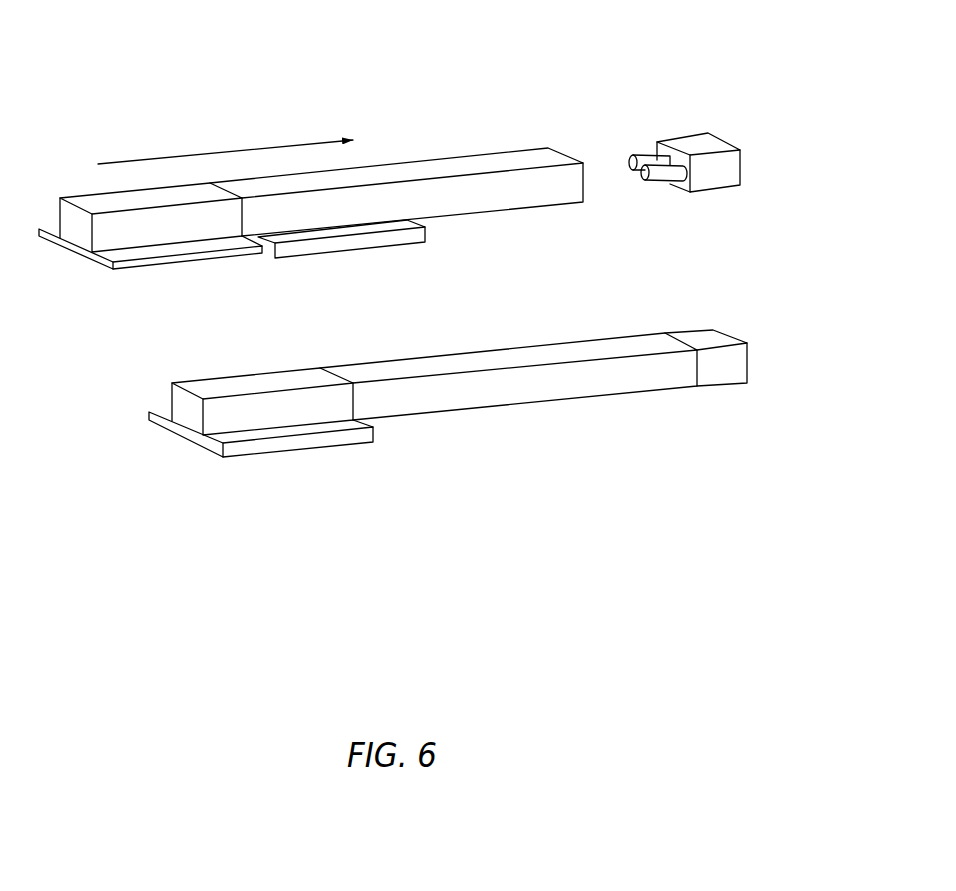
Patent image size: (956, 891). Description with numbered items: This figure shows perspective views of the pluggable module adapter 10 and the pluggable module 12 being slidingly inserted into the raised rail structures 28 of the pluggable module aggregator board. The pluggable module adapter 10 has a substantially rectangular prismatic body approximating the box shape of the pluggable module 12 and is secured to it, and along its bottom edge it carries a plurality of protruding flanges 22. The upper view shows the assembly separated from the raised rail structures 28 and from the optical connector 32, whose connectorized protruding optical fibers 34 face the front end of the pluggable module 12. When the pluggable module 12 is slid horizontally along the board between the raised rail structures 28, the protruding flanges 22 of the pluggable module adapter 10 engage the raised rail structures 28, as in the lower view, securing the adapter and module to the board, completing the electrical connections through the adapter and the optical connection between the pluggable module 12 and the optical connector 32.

The pluggable module adapter 10 is at (165, 180).
The pluggable module 12 is at (415, 157).
The protruding flanges 22 is at (152, 272).
The raised rail structures 28 is at (310, 262).
The optical connector 32 is at (710, 132).
The connectorized protruding optical fibers 34 is at (648, 138).